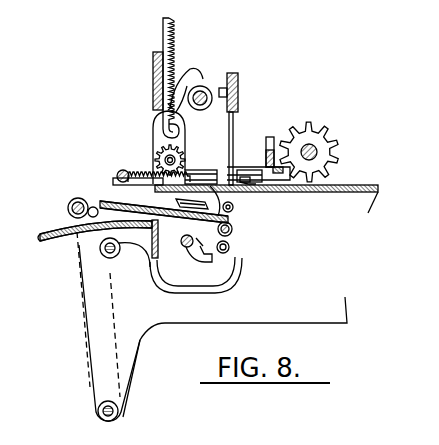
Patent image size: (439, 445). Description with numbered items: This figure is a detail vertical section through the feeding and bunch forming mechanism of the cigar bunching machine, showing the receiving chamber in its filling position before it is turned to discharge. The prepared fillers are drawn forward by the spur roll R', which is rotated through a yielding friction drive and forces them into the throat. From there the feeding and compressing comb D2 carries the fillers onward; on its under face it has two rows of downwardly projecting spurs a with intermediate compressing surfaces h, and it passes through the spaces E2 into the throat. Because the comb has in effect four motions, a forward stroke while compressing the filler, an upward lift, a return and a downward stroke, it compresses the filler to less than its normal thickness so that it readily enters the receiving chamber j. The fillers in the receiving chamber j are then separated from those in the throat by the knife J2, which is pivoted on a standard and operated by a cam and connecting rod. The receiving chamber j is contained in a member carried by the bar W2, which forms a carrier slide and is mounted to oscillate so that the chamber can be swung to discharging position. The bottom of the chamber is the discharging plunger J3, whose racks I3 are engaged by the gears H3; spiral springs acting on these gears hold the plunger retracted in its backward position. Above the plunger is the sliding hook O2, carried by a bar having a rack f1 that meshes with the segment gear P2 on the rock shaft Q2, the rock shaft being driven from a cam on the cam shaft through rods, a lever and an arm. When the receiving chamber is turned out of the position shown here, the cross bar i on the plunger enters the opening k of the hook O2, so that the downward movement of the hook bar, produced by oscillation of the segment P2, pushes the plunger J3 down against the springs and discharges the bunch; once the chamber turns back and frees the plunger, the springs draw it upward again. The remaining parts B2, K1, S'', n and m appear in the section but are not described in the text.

The rack f1 is at (166, 29).
The segment gear P2 is at (190, 67).
The rock shaft Q2 is at (203, 95).
The knife J2 is at (231, 168).
The spaces E2 is at (246, 167).
The feeding and compressing comb D2 is at (275, 148).
The block B2 is at (268, 168).
The spur roll R' is at (317, 139).
The sliding hook O2 is at (163, 115).
The opening k is at (168, 133).
The gears H3 is at (154, 153).
The bracket K1 is at (196, 178).
The cross bar i is at (117, 176).
The horizontal bar S'' is at (266, 199).
The racks I3 is at (140, 176).
The bar W2 is at (152, 225).
The hanger n is at (233, 190).
The pivot pin m is at (186, 240).
The discharging plunger J3 is at (228, 190).
The receiving chamber j is at (236, 178).
The compressing surfaces h is at (252, 190).
The spurs a is at (262, 186).